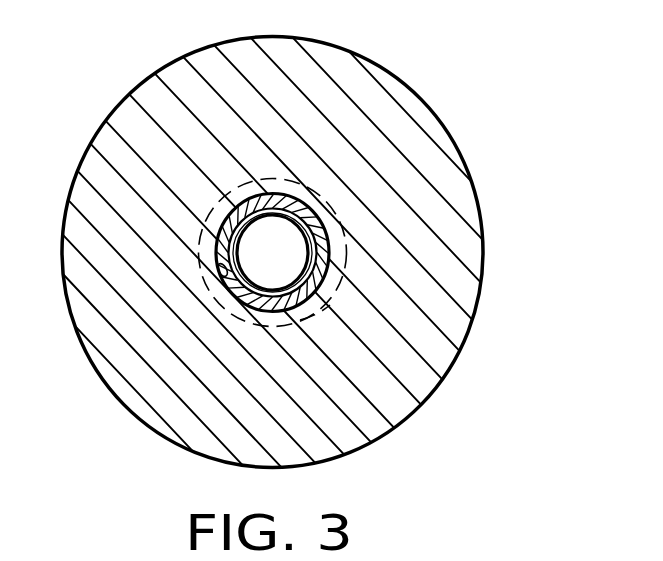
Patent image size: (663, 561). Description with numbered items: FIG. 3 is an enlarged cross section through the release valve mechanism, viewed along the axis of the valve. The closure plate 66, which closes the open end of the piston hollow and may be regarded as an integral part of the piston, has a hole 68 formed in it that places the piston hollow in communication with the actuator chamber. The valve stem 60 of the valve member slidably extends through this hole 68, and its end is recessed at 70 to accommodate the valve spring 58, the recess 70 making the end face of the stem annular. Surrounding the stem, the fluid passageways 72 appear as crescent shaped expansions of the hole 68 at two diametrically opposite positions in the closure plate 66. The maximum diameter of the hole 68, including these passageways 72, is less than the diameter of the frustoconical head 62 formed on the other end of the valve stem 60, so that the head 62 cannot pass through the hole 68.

The closure plate 66 is at (473, 247).
The fluid passageways 72 is at (272, 178).
The valve stem 60 is at (326, 243).
The head 62 is at (312, 187).
The hole 68 is at (226, 279).
The recess 70 is at (263, 246).
The valve spring 58 is at (313, 308).